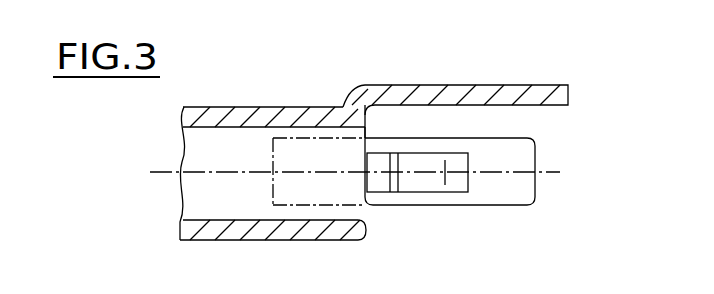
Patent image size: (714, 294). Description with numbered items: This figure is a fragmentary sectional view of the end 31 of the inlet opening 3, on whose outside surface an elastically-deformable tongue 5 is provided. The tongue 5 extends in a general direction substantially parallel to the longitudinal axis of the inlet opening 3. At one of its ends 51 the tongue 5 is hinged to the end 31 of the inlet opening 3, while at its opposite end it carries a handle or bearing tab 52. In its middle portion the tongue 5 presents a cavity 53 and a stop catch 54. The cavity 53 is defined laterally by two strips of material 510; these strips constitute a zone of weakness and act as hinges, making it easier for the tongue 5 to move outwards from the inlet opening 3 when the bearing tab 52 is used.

The inlet opening 3 is at (269, 196).
The end of the inlet opening 31 is at (322, 232).
The elastically-deformable tongue 5 is at (433, 165).
The hinged end of the tongue 51 is at (361, 195).
The handle or bearing tab 52 is at (518, 190).
The cavity 53 is at (396, 153).
The stop catch 54 is at (433, 165).
The strips of material 510 is at (380, 165).